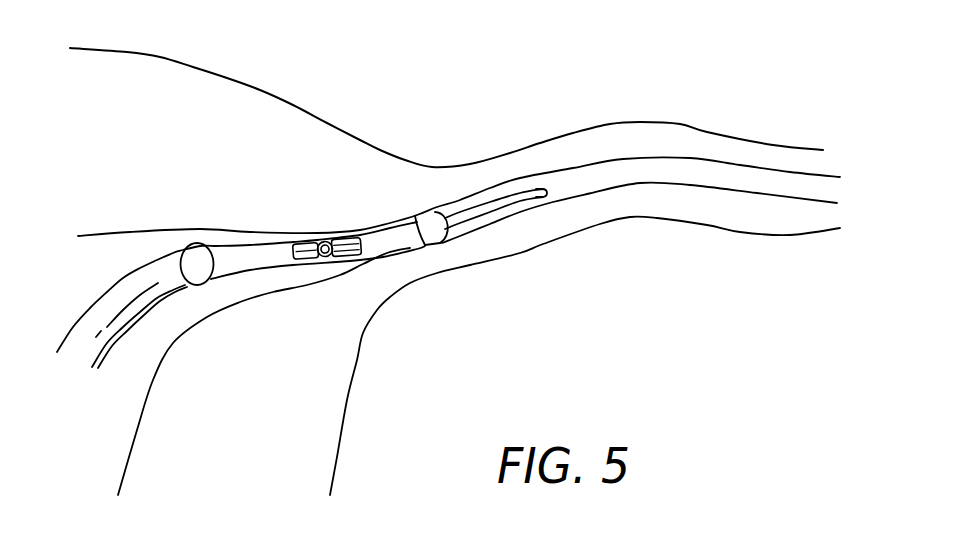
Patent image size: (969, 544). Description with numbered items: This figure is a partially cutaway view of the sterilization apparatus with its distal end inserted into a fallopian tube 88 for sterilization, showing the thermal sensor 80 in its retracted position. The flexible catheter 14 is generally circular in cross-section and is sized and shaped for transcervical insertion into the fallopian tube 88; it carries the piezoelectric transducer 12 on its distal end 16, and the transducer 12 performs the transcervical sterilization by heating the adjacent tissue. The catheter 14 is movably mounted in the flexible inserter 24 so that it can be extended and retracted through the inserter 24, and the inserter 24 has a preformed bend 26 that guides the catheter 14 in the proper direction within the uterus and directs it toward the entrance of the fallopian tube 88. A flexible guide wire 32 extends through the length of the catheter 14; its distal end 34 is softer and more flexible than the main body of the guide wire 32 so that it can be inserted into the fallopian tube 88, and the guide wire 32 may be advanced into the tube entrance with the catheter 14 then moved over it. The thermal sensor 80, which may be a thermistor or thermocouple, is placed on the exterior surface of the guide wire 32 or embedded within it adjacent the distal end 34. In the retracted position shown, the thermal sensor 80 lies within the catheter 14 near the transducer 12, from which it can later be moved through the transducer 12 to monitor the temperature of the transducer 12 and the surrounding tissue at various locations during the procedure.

The piezoelectric transducer 12 is at (397, 230).
The flexible catheter 14 is at (418, 213).
The distal end 16 is at (363, 257).
The inserter 24 is at (87, 312).
The preformed bend 26 is at (158, 256).
The guide wire 32 is at (473, 210).
The distal end 34 is at (520, 190).
The thermal sensor 80 is at (324, 244).
The fallopian tube 88 is at (576, 128).